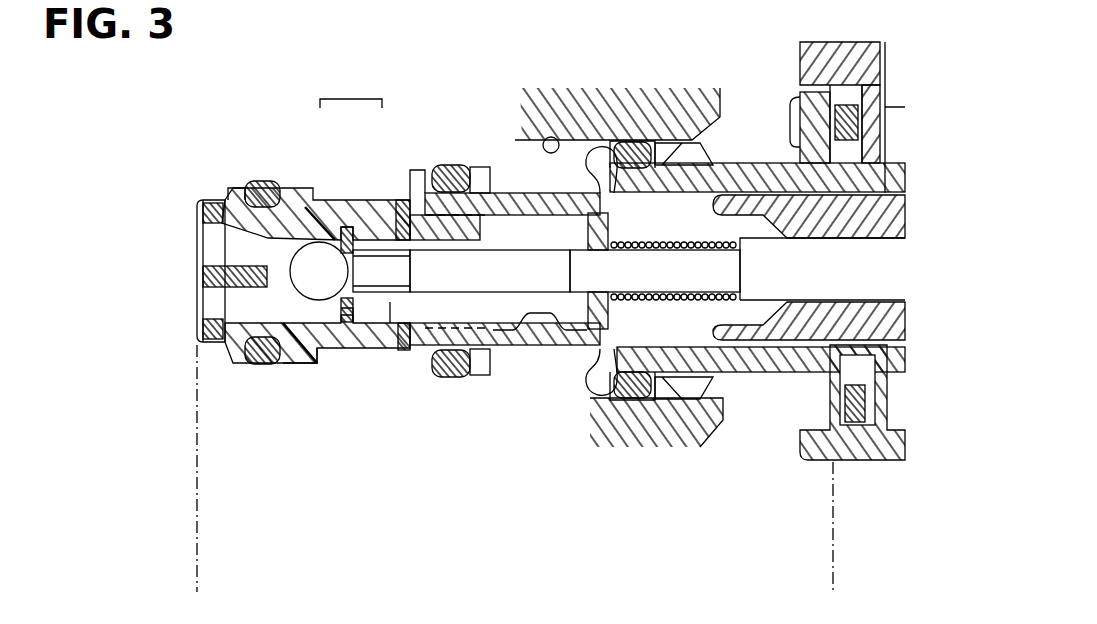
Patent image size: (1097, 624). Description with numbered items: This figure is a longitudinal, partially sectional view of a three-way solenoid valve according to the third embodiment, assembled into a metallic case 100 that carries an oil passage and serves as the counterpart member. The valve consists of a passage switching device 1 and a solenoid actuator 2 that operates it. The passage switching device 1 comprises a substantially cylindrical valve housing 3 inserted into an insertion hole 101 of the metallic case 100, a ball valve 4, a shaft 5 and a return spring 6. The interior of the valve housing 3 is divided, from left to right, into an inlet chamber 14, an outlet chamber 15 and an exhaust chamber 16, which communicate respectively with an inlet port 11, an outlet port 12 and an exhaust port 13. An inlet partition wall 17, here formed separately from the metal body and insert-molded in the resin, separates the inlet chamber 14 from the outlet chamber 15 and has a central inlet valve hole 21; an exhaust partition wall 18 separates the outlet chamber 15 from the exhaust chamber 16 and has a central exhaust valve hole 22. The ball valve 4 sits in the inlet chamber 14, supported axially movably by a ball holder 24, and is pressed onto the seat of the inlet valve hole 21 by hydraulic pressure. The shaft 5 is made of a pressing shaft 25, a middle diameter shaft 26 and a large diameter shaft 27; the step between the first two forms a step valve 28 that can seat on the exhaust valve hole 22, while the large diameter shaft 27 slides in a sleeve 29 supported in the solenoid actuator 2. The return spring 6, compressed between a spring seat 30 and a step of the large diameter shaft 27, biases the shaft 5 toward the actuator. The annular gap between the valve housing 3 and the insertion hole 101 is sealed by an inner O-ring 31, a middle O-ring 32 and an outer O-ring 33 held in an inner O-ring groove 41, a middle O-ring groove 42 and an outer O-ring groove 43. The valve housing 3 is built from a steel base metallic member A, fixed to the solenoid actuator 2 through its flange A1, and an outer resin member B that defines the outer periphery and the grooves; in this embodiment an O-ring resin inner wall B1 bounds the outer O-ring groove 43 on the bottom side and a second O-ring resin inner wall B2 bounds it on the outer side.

The passage switching device 1 is at (200, 578).
The solenoid actuator 2 is at (874, 478).
The valve housing 3 is at (351, 87).
The ball valve 4 is at (300, 280).
The shaft 5 is at (530, 300).
The return spring 6 is at (672, 400).
The inlet port 11 is at (205, 250).
The outlet port 12 is at (374, 330).
The exhaust port 13 is at (550, 337).
The inlet chamber 14 is at (206, 225).
The outlet chamber 15 is at (335, 212).
The exhaust chamber 16 is at (522, 227).
The inlet partition wall 17 is at (310, 362).
The exhaust partition wall 18 is at (394, 330).
The inlet valve hole 21 is at (238, 364).
The exhaust valve hole 22 is at (414, 350).
The ball holder 24 is at (206, 280).
The pressing shaft 25 is at (358, 310).
The middle diameter shaft 26 is at (477, 350).
The large diameter shaft 27 is at (772, 290).
The step valve 28 is at (402, 200).
The sleeve 29 is at (783, 196).
The spring seat 30 is at (603, 398).
The inner O-ring 31 is at (262, 180).
The middle O-ring 32 is at (475, 168).
The outer O-ring 33 is at (640, 145).
The inner O-ring groove 41 is at (248, 185).
The middle O-ring groove 42 is at (448, 166).
The outer O-ring groove 43 is at (625, 147).
The metallic case 100 is at (721, 92).
The insertion hole 101 is at (549, 137).
The base metallic member A is at (362, 240).
The outer resin member B is at (348, 226).
The flange A1 is at (818, 433).
The O-ring resin inner wall B1 is at (603, 153).
The O-ring resin inner wall B2 is at (680, 155).